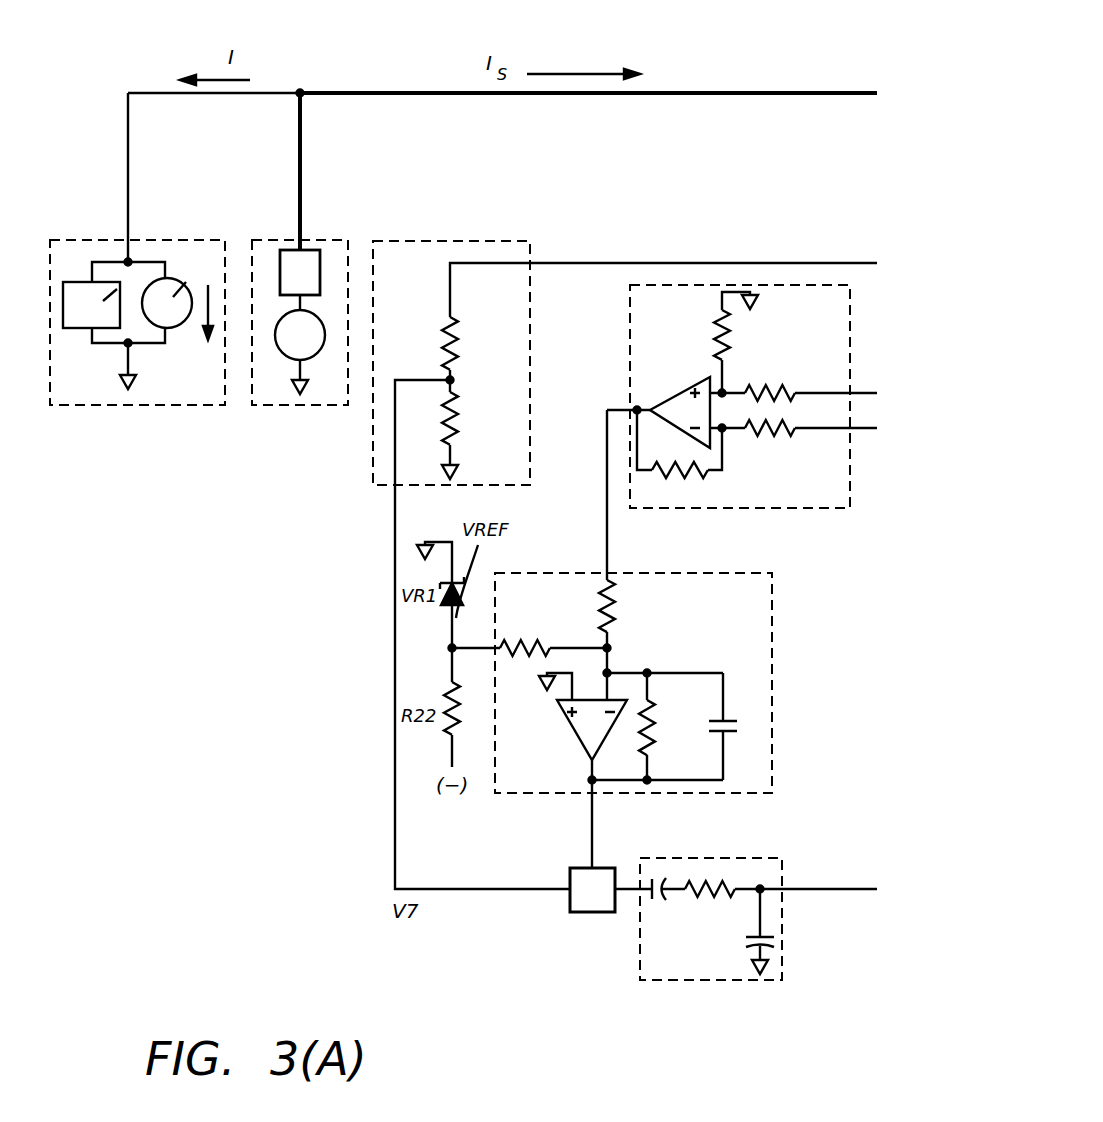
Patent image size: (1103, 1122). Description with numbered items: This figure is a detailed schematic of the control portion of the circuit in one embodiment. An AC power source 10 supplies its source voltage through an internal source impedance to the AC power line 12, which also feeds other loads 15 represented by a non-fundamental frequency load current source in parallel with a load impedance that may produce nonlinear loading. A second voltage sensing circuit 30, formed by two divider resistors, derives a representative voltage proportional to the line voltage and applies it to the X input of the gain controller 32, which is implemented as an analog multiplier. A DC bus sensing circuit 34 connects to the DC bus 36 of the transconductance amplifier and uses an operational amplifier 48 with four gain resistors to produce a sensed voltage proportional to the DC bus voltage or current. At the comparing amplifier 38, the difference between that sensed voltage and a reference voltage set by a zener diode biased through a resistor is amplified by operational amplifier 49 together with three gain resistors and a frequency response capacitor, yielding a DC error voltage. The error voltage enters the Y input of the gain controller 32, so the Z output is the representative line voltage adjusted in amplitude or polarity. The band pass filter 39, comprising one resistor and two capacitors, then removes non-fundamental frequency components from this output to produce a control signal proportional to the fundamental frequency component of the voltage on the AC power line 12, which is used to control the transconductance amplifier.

The AC power line 12 is at (783, 92).
The other loads 15 is at (183, 240).
The AC power source 10 is at (323, 240).
The second voltage sensing circuit 30 is at (425, 240).
The DC bus sensing circuit 34 is at (742, 442).
The operational amplifier 48 is at (690, 383).
The DC bus 36 is at (816, 428).
The comparing amplifier 38 is at (612, 639).
The operational amplifier 49 is at (565, 720).
The gain controller 32 is at (592, 912).
The band pass filter 39 is at (712, 980).